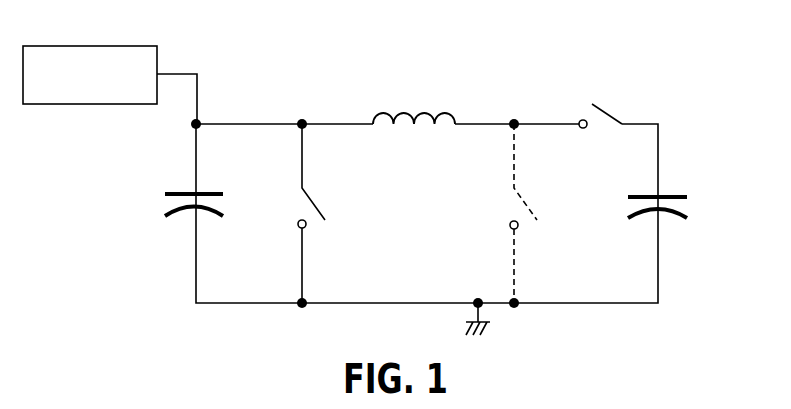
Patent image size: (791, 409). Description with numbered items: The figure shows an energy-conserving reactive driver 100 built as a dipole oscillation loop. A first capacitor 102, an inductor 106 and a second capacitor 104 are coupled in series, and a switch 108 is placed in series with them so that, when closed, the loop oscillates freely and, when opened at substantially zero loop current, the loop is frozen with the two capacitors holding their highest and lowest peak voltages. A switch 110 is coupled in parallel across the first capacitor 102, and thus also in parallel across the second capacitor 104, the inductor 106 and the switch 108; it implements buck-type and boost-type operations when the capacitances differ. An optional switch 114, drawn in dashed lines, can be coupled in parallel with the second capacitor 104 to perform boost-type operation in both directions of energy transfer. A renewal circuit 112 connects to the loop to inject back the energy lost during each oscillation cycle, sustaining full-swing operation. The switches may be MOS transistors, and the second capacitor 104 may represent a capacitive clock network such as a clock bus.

The reactive driver 100 is at (571, 73).
The first capacitor 102 is at (175, 192).
The second capacitor 104 is at (677, 193).
The inductor 106 is at (380, 112).
The switch 108 is at (607, 113).
The switch 110 is at (317, 203).
The renewal circuit 112 is at (78, 105).
The switch 114 is at (525, 203).